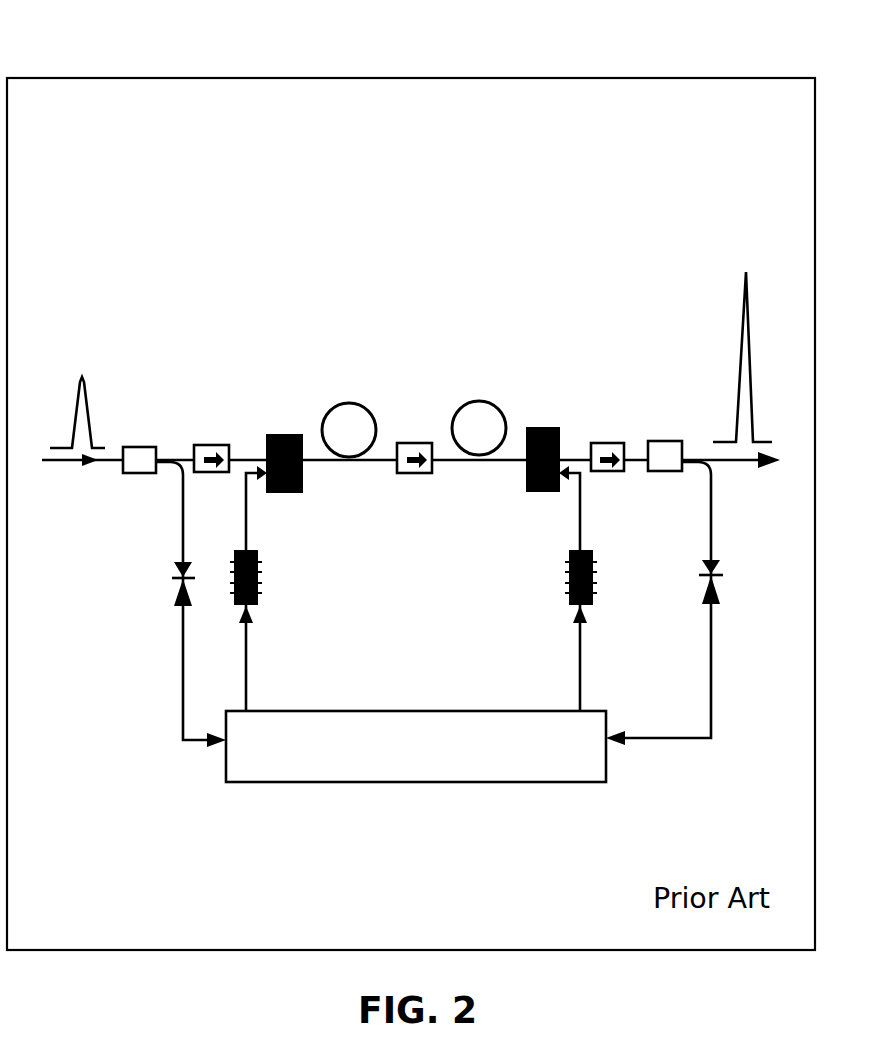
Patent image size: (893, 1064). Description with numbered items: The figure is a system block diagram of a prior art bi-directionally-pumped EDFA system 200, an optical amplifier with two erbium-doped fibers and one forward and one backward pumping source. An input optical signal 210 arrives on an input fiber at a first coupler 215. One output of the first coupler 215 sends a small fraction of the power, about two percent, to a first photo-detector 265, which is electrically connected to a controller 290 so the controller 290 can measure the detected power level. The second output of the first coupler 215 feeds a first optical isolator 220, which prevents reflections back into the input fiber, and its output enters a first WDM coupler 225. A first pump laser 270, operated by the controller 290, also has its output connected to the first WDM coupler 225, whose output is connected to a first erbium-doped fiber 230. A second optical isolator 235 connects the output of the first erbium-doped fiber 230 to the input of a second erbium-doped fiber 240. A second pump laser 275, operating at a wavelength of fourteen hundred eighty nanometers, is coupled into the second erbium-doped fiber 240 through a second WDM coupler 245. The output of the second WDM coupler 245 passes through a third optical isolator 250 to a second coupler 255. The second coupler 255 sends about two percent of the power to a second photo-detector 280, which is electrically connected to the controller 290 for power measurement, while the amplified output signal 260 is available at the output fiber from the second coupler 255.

The bi-directionally-pumped EDFA system 200 is at (383, 44).
The input optical signal 210 is at (83, 387).
The first coupler 215 is at (138, 453).
The first optical isolator 220 is at (210, 453).
The first WDM coupler 225 is at (278, 435).
The first erbium-doped fiber 230 is at (350, 401).
The second optical isolator 235 is at (410, 443).
The second erbium-doped fiber 240 is at (470, 401).
The second WDM coupler 245 is at (537, 427).
The third optical isolator 250 is at (605, 443).
The second coupler 255 is at (665, 441).
The amplified output signal 260 is at (745, 385).
The first photo-detector 265 is at (178, 605).
The first pump laser 270 is at (258, 577).
The second pump laser 275 is at (568, 587).
The second photo-detector 280 is at (707, 605).
The controller 290 is at (253, 753).